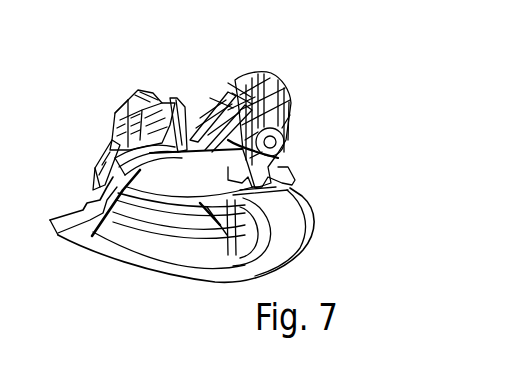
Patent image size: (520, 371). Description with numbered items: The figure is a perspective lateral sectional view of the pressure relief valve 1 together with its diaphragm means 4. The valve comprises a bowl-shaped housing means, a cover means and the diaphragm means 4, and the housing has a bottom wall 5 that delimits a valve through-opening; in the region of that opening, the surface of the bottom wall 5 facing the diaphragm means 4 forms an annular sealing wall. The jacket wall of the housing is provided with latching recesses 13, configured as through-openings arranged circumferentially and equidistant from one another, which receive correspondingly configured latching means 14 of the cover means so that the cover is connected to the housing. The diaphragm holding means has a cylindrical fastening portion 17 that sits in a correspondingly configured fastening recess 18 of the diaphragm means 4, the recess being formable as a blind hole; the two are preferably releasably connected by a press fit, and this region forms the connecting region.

The pressure relief valve 1 is at (4, 17).
The diaphragm means 4 is at (228, 137).
The bottom wall 5 is at (238, 173).
The latching recesses 13 is at (295, 114).
The latching means 14 is at (256, 101).
The cylindrical fastening portion 17 is at (183, 150).
The fastening recess 18 is at (92, 236).